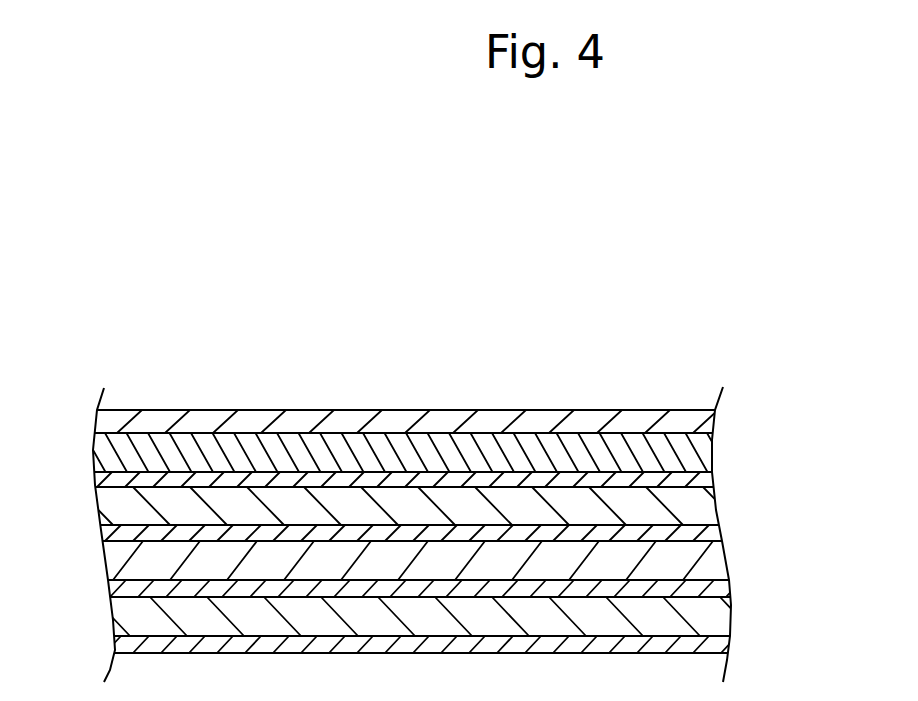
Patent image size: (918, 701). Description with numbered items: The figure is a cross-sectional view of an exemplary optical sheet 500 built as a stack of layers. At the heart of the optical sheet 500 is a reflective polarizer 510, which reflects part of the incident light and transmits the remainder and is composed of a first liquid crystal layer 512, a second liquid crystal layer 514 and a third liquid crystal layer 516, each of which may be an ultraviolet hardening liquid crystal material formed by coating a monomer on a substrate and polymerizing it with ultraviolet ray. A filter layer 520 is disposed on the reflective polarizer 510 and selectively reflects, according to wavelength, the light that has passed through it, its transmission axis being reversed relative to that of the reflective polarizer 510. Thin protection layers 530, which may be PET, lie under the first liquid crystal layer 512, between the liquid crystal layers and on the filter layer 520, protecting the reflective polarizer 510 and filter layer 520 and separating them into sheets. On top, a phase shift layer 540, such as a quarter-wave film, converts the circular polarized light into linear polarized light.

The optical sheet 500 is at (455, 392).
The reflective polarizer 510 is at (805, 500).
The first liquid crystal layer 512 is at (706, 620).
The second liquid crystal layer 514 is at (706, 563).
The third liquid crystal layer 516 is at (706, 507).
The filter layer 520 is at (706, 452).
The protection layer 530 is at (120, 481).
The phase shift layer 540 is at (706, 420).